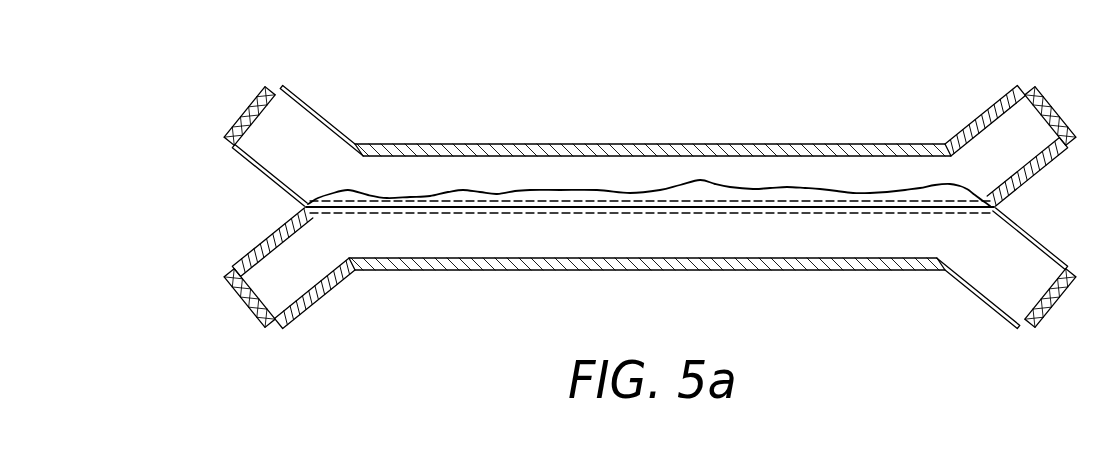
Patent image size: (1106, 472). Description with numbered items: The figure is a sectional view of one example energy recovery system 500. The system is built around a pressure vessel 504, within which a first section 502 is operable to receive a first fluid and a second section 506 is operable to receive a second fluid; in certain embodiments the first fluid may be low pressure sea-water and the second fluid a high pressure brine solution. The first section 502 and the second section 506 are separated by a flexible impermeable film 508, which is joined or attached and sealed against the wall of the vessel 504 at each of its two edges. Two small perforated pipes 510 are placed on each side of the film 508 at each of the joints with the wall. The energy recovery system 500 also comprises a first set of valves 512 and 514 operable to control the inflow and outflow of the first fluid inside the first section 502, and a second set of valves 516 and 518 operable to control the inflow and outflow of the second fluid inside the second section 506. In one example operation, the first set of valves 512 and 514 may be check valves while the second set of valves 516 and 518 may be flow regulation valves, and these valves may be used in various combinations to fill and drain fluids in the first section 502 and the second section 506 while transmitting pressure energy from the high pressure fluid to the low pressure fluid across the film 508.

The energy recovery system 500 is at (853, 46).
The first section 502 is at (310, 285).
The pressure vessel 504 is at (828, 146).
The second section 506 is at (388, 170).
The flexible impermeable film 508 is at (702, 181).
The perforated pipes 510 is at (663, 212).
The first set valve 512 is at (244, 297).
The first set valve 514 is at (1058, 303).
The second set valve 516 is at (245, 113).
The second set valve 518 is at (1072, 97).